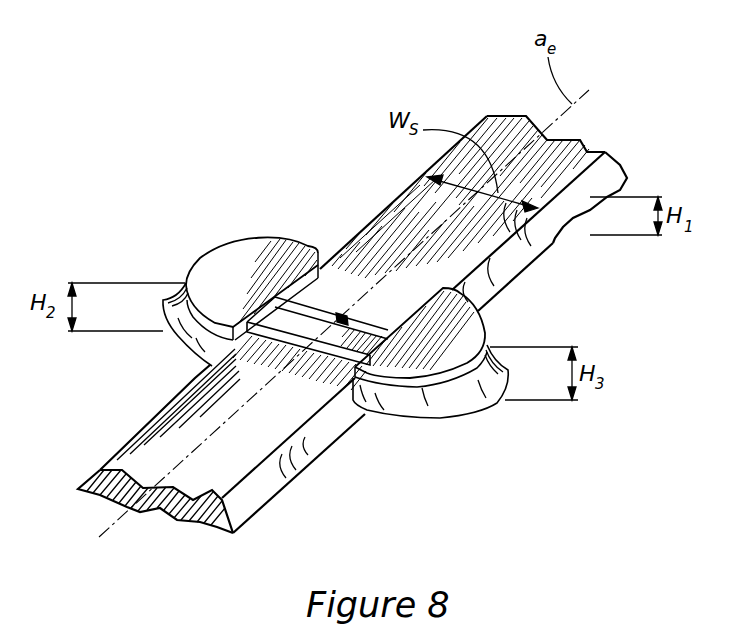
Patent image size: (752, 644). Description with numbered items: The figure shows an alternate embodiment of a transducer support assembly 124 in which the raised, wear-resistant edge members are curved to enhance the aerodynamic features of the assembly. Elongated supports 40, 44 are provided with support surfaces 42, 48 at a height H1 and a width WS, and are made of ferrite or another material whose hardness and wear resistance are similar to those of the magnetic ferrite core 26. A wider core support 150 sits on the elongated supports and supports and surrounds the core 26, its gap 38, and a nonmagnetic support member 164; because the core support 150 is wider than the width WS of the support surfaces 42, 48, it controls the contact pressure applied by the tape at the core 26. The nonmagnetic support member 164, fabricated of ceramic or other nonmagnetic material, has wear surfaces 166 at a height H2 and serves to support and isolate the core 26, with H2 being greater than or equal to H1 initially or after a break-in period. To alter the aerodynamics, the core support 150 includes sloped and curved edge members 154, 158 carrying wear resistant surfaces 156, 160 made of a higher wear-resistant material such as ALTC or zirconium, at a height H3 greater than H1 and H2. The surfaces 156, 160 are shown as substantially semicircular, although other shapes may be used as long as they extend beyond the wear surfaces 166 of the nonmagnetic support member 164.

The transducer support assembly 124 is at (239, 187).
The wear resistant surface 160 is at (212, 286).
The nonmagnetic support member 164 is at (284, 272).
The edge member 158 is at (162, 306).
The core 26 is at (304, 290).
The gap 38 is at (344, 312).
The wear resistant surface 156 is at (488, 372).
The edge member 154 is at (436, 388).
The core support 150 is at (488, 411).
The wear surfaces 166 is at (417, 285).
The elongated support 40 is at (85, 487).
The support surface 42 is at (173, 456).
The elongated support 44 is at (610, 165).
The support surface 48 is at (590, 152).